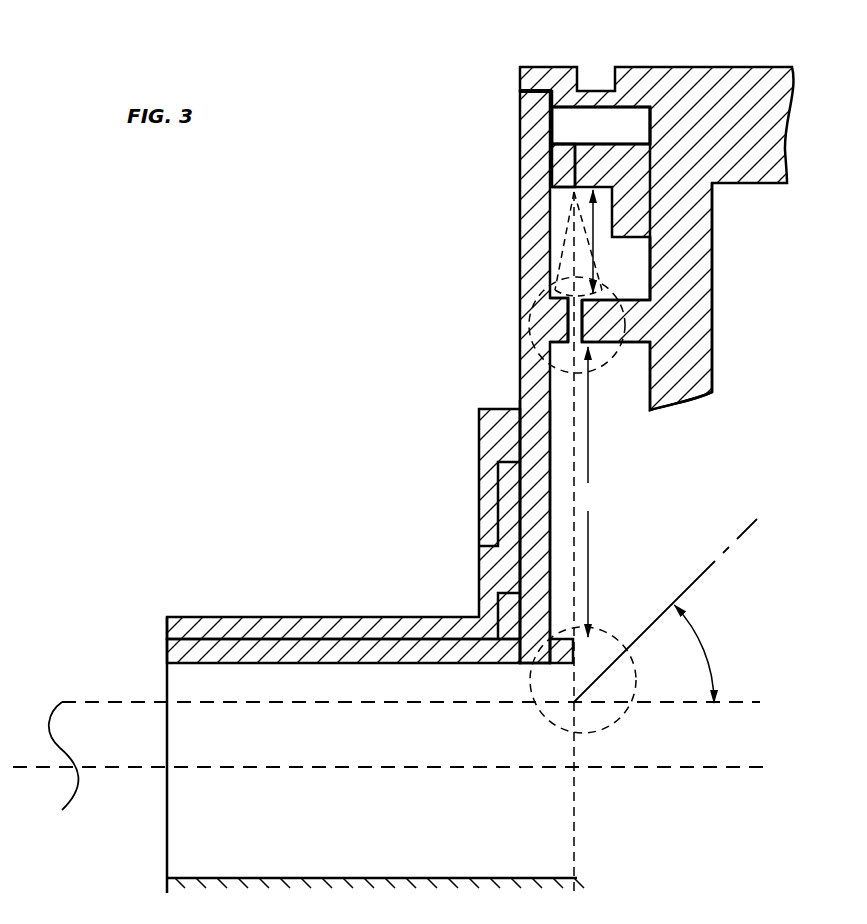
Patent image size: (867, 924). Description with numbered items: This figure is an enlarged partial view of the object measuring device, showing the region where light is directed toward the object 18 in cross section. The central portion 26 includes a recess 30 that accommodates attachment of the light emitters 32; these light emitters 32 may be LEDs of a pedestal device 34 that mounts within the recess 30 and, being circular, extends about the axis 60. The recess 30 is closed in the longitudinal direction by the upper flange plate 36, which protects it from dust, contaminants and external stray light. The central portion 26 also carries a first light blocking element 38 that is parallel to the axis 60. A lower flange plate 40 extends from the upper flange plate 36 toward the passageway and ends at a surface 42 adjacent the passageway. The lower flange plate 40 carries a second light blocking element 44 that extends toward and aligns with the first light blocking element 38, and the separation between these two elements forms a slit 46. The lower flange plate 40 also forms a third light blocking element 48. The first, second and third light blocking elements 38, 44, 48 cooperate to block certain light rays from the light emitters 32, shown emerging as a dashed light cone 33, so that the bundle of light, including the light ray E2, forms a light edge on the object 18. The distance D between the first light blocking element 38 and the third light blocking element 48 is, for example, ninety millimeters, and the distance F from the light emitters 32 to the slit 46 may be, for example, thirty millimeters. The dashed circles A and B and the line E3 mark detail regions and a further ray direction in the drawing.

The object 18 is at (97, 720).
The central portion 26 is at (707, 83).
The recess 30 is at (563, 127).
The light emitters 32 is at (573, 160).
The spray cone 33 is at (566, 236).
The pedestal device 34 is at (615, 157).
The upper flange plate 36 is at (530, 196).
The first light blocking element 38 is at (627, 327).
The lower flange plate 40 is at (518, 375).
The surface 42 is at (555, 663).
The second light blocking element 44 is at (557, 322).
The slit 46 is at (575, 333).
The third light blocking element 48 is at (560, 653).
The axis 60 is at (40, 767).
The detail region A is at (597, 370).
The detail region B is at (625, 712).
The distance D is at (587, 492).
The distance F is at (596, 248).
The light ray E2 is at (573, 554).
The axis E3 is at (737, 543).